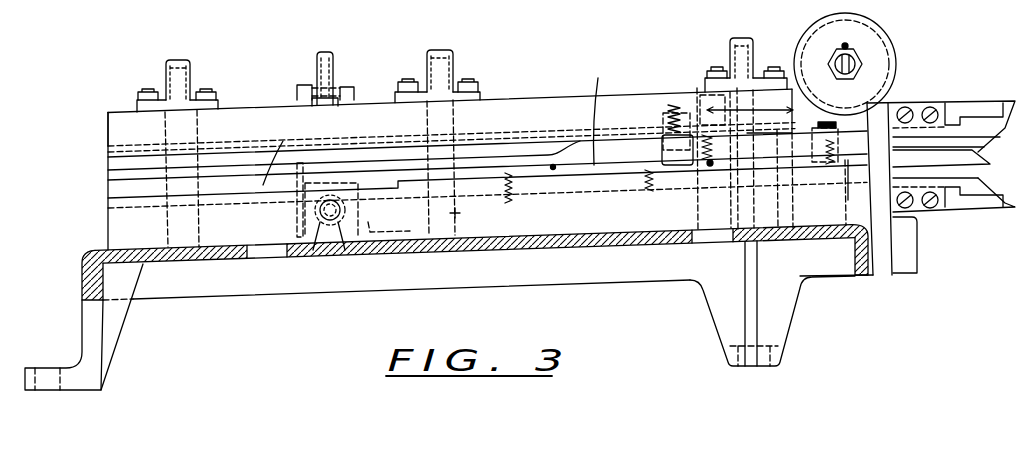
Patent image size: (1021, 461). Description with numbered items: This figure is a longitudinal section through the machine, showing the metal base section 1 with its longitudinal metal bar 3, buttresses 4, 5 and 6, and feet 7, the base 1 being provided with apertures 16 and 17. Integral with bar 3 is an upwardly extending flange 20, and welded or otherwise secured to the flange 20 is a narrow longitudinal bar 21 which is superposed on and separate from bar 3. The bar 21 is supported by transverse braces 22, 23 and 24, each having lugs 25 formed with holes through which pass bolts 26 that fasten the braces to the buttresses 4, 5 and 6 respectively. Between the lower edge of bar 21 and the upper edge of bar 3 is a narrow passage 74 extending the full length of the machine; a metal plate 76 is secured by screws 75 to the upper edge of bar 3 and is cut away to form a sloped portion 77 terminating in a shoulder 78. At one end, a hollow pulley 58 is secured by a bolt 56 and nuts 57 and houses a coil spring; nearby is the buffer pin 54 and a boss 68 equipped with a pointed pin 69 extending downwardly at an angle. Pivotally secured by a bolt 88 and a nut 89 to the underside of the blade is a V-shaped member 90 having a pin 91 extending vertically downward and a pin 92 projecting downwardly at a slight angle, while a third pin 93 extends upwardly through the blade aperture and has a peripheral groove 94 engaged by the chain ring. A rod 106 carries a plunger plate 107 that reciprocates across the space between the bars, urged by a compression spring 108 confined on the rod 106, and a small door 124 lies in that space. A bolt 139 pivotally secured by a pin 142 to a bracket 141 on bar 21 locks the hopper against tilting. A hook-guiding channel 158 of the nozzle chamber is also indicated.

The base section 1 is at (540, 254).
The longitudinal metal bar 3 is at (108, 220).
The buttress 4 is at (195, 136).
The buttress 5 is at (455, 128).
The buttress 6 is at (740, 217).
The feet 7 is at (82, 337).
The aperture 16 is at (712, 242).
The aperture 17 is at (272, 258).
The flange 20 is at (878, 115).
The narrow longitudinal bar 21 is at (110, 137).
The transverse brace 22 is at (178, 91).
The transverse brace 23 is at (440, 80).
The transverse brace 24 is at (752, 62).
The lug 25 is at (218, 103).
The bolt 26 is at (147, 92).
The buffer pin 54 is at (750, 103).
The bolt 56 is at (860, 66).
The nut 57 is at (858, 62).
The hollow pulley 58 is at (865, 45).
The boss 68 is at (836, 128).
The pointed pin 69 is at (812, 151).
The narrow passage 74 is at (566, 143).
The screw 75 is at (505, 204).
The metal plate 76 is at (565, 180).
The sloped portion 77 is at (762, 168).
The shoulder 78 is at (772, 163).
The bolt 88 is at (660, 151).
The nut 89 is at (662, 122).
The V-shaped member 90 is at (694, 166).
The pin 91 is at (735, 178).
The pin 92 is at (708, 168).
The third pin 93 is at (667, 106).
The peripheral groove 94 is at (712, 109).
The rod 106 is at (331, 228).
The plunger plate 107 is at (358, 219).
The compression spring 108 is at (313, 255).
The door 124 is at (296, 217).
The bolt 139 is at (330, 68).
The bracket 141 is at (300, 86).
The pin 142 is at (353, 93).
The hook-guiding channel 158 is at (882, 158).